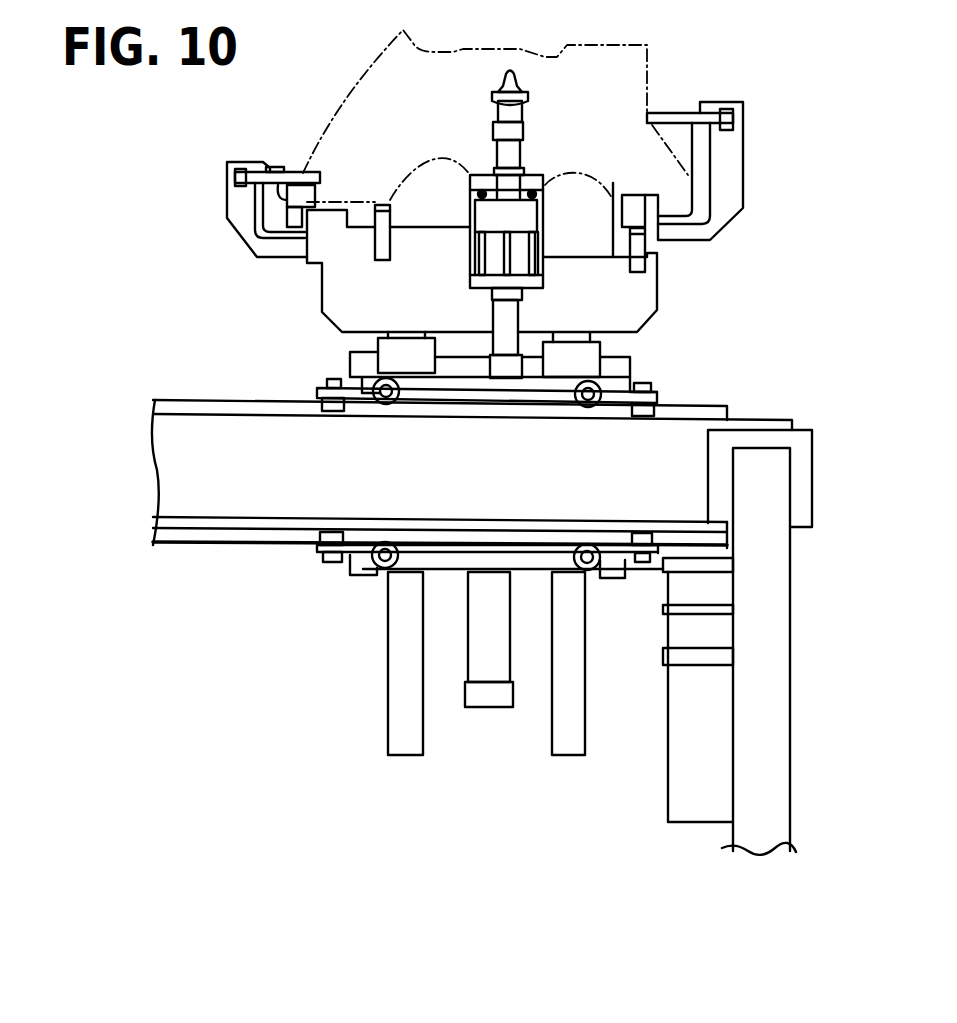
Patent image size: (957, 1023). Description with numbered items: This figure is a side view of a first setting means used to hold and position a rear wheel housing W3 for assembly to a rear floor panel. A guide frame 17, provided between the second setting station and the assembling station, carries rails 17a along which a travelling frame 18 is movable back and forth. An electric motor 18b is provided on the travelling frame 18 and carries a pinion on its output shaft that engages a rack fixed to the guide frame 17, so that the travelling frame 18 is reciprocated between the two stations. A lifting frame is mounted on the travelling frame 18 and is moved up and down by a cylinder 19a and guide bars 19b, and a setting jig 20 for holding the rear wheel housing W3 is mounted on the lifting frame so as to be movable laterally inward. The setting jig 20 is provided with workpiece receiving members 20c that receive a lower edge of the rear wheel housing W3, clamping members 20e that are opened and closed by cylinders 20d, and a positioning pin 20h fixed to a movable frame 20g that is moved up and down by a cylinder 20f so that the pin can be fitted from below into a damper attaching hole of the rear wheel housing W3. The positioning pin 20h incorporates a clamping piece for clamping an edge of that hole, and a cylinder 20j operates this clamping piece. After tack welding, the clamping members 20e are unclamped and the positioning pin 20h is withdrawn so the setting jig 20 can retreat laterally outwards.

The rear wheel housing W3 is at (347, 95).
The guide frame 17 is at (275, 500).
The rails 17a is at (205, 405).
The travelling frame 18 is at (620, 372).
The electric motor 18b is at (687, 700).
The cylinder 19a is at (489, 695).
The guide bars 19b is at (402, 707).
The setting jig 20 is at (650, 292).
The workpiece receiving members 20c is at (383, 203).
The cylinders 20d is at (245, 190).
The clamping members 20e is at (293, 172).
The cylinder 20f is at (505, 314).
The movable frame 20g is at (487, 218).
The positioning pin 20h is at (514, 80).
The cylinder 20j is at (516, 152).